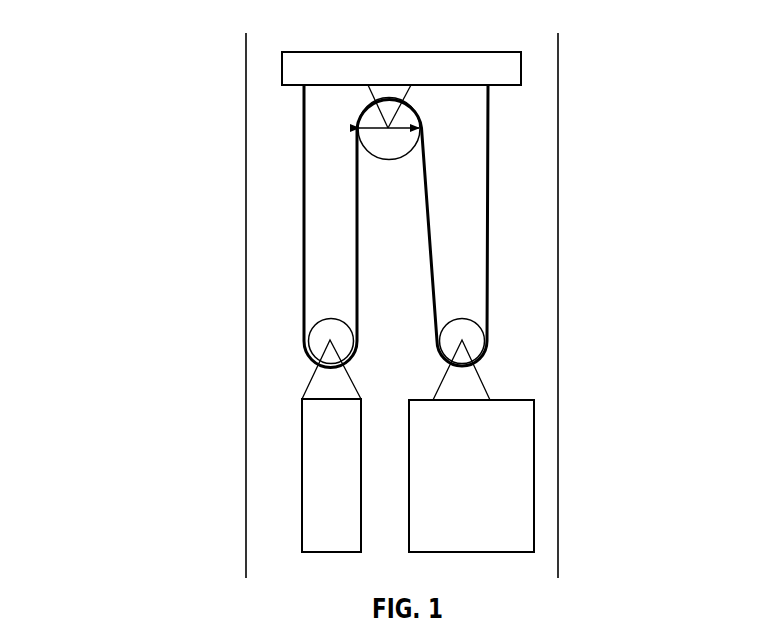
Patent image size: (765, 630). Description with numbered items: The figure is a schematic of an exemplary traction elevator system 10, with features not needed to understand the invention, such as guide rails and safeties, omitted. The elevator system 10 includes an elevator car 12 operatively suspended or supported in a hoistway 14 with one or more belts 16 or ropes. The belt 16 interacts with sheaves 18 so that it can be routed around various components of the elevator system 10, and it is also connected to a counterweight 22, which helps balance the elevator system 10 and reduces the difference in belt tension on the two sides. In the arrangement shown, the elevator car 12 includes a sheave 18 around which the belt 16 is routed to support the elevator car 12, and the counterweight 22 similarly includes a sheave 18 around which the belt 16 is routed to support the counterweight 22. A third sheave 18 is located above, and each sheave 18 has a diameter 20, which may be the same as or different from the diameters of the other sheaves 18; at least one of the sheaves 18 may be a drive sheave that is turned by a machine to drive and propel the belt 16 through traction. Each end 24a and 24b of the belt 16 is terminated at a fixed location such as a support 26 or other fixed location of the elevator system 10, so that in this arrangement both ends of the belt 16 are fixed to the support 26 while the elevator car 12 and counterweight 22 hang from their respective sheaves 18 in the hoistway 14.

The elevator system 10 is at (126, 42).
The elevator car 12 is at (534, 473).
The hoistway 14 is at (268, 194).
The belt 16 is at (303, 258).
The sheave 18 is at (405, 142).
The diameter 20 is at (377, 134).
The counterweight 22 is at (302, 472).
The first end 24a is at (489, 86).
The second end 24b is at (303, 86).
The support 26 is at (351, 52).